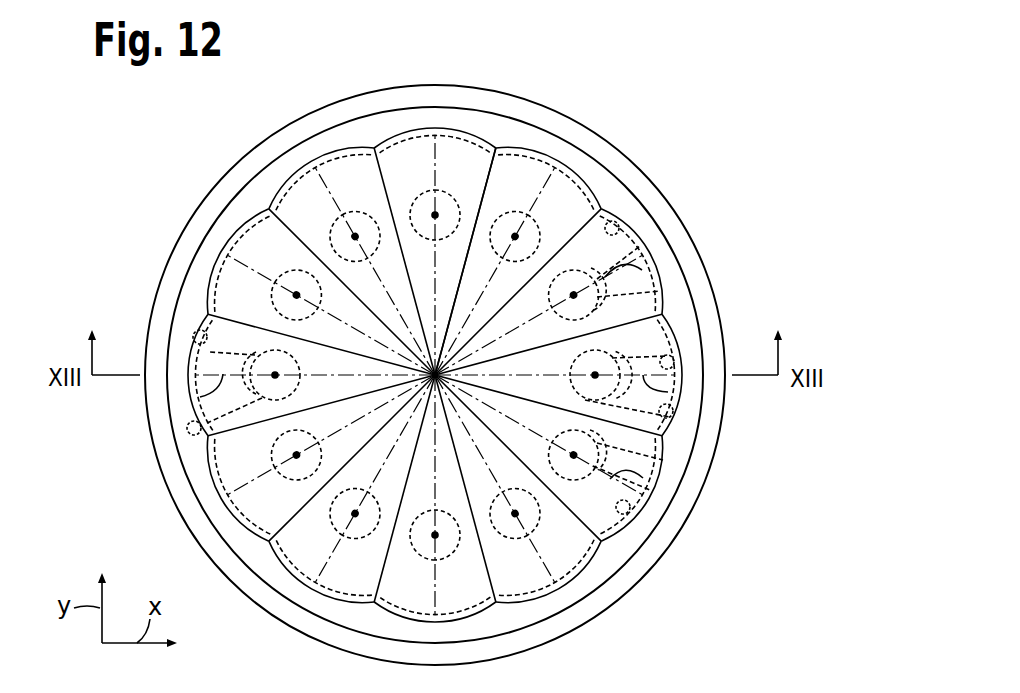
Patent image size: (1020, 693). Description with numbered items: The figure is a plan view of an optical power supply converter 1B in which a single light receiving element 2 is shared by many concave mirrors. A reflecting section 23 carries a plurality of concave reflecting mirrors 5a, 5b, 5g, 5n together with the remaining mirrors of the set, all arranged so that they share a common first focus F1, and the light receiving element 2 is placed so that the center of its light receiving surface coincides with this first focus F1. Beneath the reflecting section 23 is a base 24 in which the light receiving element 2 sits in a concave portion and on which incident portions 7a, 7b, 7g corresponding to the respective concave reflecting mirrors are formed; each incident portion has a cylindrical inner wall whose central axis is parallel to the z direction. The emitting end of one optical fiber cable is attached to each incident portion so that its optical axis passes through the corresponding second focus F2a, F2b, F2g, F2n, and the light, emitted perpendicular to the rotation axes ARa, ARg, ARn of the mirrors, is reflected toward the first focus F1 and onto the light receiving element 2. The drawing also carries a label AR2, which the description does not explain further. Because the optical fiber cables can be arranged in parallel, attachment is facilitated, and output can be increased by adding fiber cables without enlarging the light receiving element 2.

The optical power supply converter 1B is at (196, 146).
The light receiving element 2 is at (262, 258).
The reflecting section 23 is at (616, 171).
The base 24 is at (563, 115).
The concave reflecting mirror 5a is at (624, 390).
The concave reflecting mirror 5b is at (588, 294).
The concave reflecting mirror 5g is at (249, 383).
The concave reflecting mirror 5n is at (581, 465).
The incident portion 7a is at (662, 420).
The incident portion 7b is at (660, 291).
The incident portion 7g is at (200, 430).
The rotation axis ARa is at (655, 397).
The rotation axis ARg is at (215, 396).
The rotation axis ARn is at (655, 488).
The second region AR2 is at (653, 273).
The first focus F1 is at (465, 261).
The second focus F2a is at (614, 365).
The second focus F2b is at (584, 288).
The second focus F2g is at (259, 362).
The second focus F2n is at (574, 466).